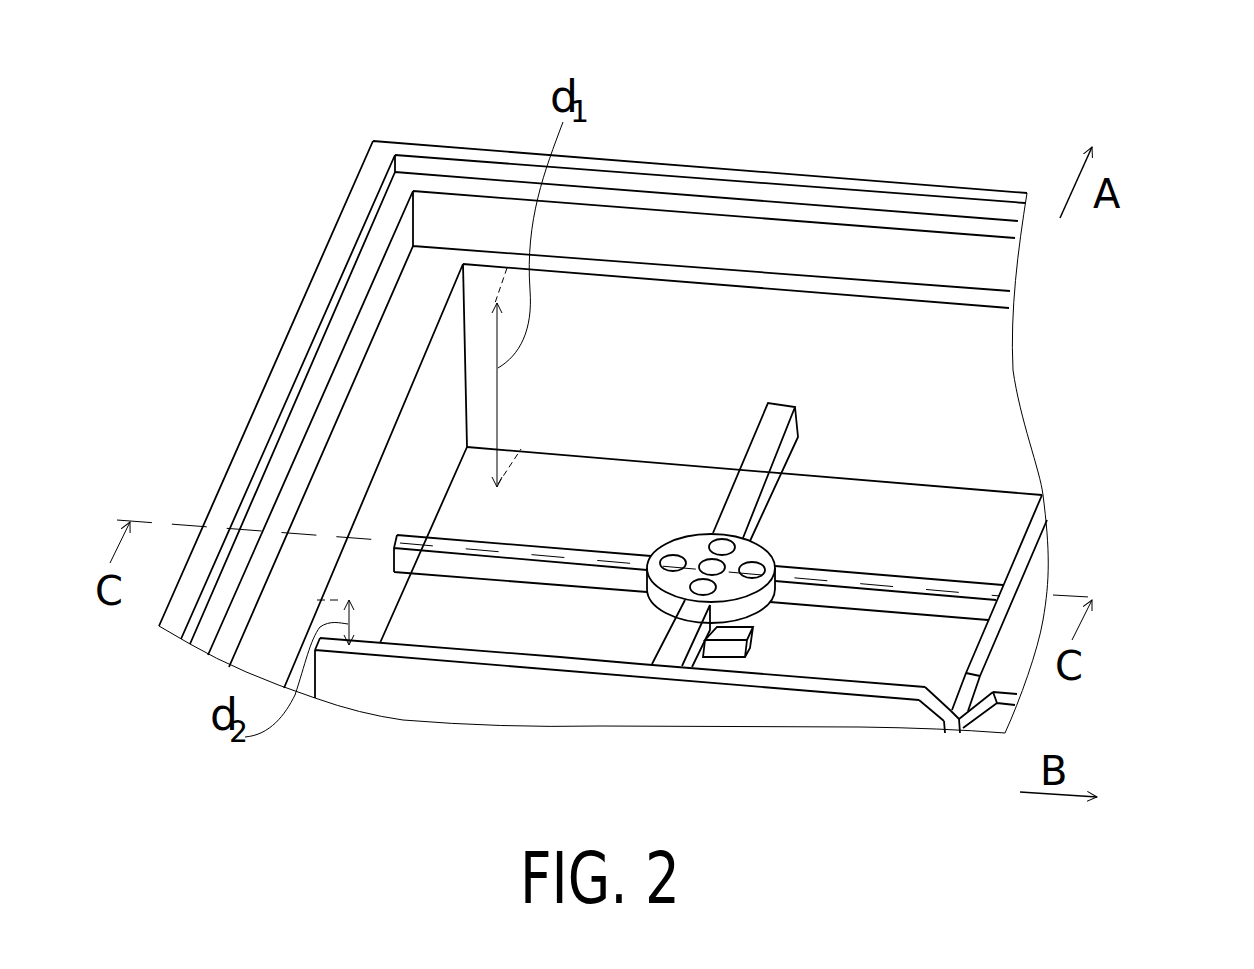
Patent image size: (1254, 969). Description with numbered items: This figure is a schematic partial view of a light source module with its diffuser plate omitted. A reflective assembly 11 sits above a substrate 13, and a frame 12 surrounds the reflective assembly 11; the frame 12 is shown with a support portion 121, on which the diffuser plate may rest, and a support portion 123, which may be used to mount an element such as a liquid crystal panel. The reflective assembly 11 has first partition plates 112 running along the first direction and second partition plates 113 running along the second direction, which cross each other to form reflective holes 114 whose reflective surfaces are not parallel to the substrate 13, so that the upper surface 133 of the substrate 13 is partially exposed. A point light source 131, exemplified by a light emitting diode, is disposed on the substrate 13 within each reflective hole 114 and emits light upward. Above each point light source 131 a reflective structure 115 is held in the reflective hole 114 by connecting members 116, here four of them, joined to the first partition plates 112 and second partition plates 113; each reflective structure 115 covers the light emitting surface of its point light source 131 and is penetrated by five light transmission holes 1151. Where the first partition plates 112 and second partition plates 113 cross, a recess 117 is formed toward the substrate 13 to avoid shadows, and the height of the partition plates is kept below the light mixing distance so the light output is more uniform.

The reflective assembly 11 is at (473, 535).
The frame 12 is at (352, 262).
The substrate 13 is at (562, 628).
The first partition plates 112 is at (1017, 567).
The second partition plates 113 is at (442, 673).
The reflective holes 114 is at (948, 470).
The reflective structures 115 is at (688, 547).
The connecting members 116 is at (777, 425).
The recesses 117 is at (945, 692).
The support portion 121 is at (417, 290).
The support portion 123 is at (440, 188).
The point light sources 131 is at (720, 633).
The upper surface 133 is at (591, 652).
The light transmission holes 1151 is at (725, 547).